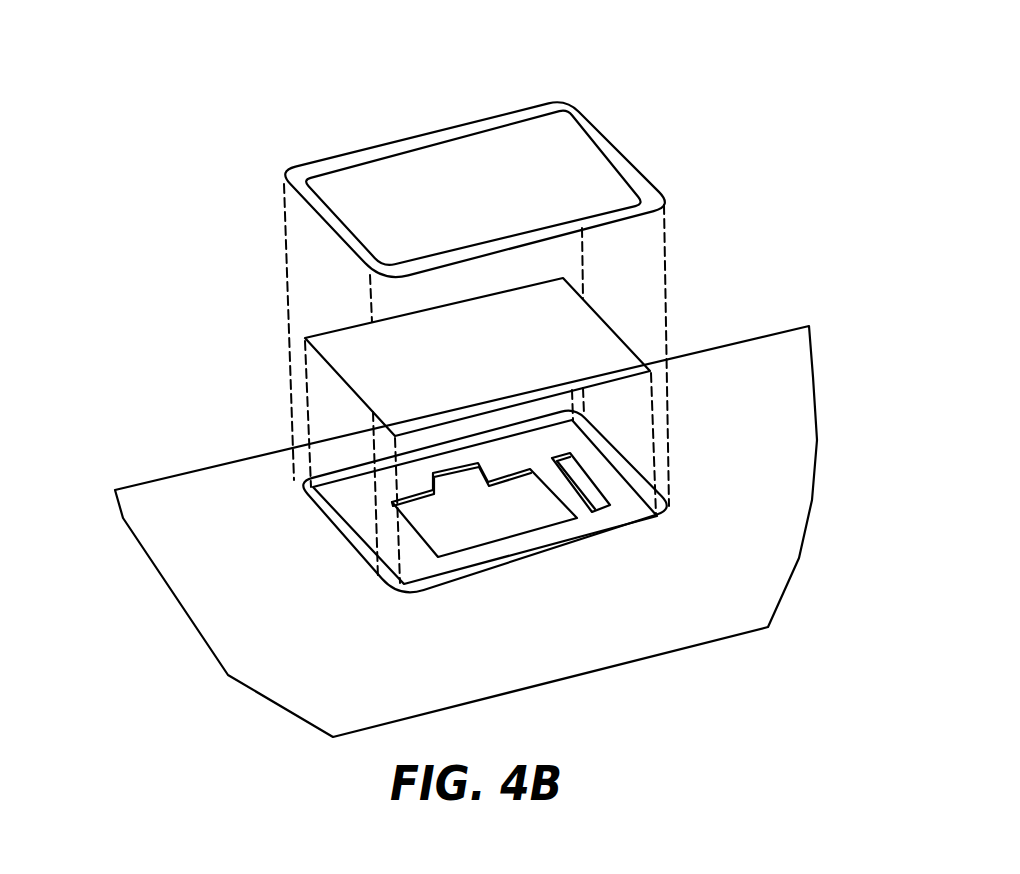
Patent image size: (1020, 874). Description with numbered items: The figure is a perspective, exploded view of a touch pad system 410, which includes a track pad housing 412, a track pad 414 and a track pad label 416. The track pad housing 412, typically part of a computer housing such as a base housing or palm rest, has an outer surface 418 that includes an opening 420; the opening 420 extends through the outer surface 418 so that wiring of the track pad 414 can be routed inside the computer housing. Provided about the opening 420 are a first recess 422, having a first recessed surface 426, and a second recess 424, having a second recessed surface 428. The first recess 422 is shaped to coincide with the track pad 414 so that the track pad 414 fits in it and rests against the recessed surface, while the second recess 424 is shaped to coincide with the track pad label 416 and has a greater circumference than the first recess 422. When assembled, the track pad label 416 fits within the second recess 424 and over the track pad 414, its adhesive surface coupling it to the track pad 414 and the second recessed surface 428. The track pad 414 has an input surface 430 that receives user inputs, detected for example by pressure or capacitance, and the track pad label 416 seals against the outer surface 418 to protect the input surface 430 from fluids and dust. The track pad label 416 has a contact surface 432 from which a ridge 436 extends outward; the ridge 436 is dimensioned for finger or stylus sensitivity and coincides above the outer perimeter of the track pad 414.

The touch pad system 410 is at (143, 94).
The track pad housing 412 is at (182, 475).
The track pad 414 is at (612, 328).
The track pad label 416 is at (612, 145).
The outer surface 418 is at (342, 648).
The opening 420 is at (492, 518).
The first recess 422 is at (452, 575).
The second recess 424 is at (318, 521).
The first recessed surface 426 is at (547, 464).
The second recessed surface 428 is at (602, 442).
The input surface 430 is at (469, 360).
The contact surface 432 is at (444, 200).
The ridge 436 is at (441, 142).